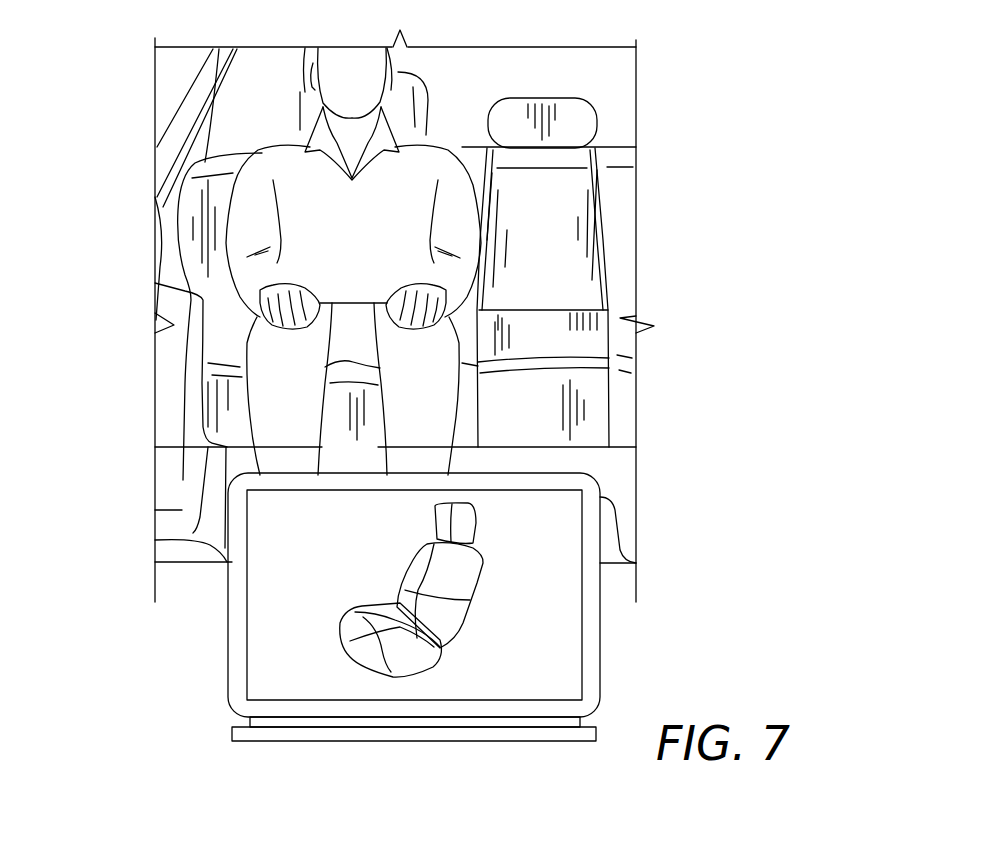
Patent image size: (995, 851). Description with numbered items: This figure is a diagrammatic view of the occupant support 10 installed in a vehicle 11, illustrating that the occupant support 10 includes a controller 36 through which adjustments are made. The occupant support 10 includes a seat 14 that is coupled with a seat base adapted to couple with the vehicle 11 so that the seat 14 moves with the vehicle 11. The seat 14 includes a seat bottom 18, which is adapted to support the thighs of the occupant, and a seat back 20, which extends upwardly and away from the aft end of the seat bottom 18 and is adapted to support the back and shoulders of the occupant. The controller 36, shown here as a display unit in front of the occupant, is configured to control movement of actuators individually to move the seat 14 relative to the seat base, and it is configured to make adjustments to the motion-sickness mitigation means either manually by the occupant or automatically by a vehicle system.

The occupant support 10 is at (120, 78).
The vehicle 11 is at (614, 120).
The seat 14 is at (232, 346).
The seat bottom 18 is at (468, 400).
The seat back 20 is at (430, 100).
The controller 36 is at (605, 642).